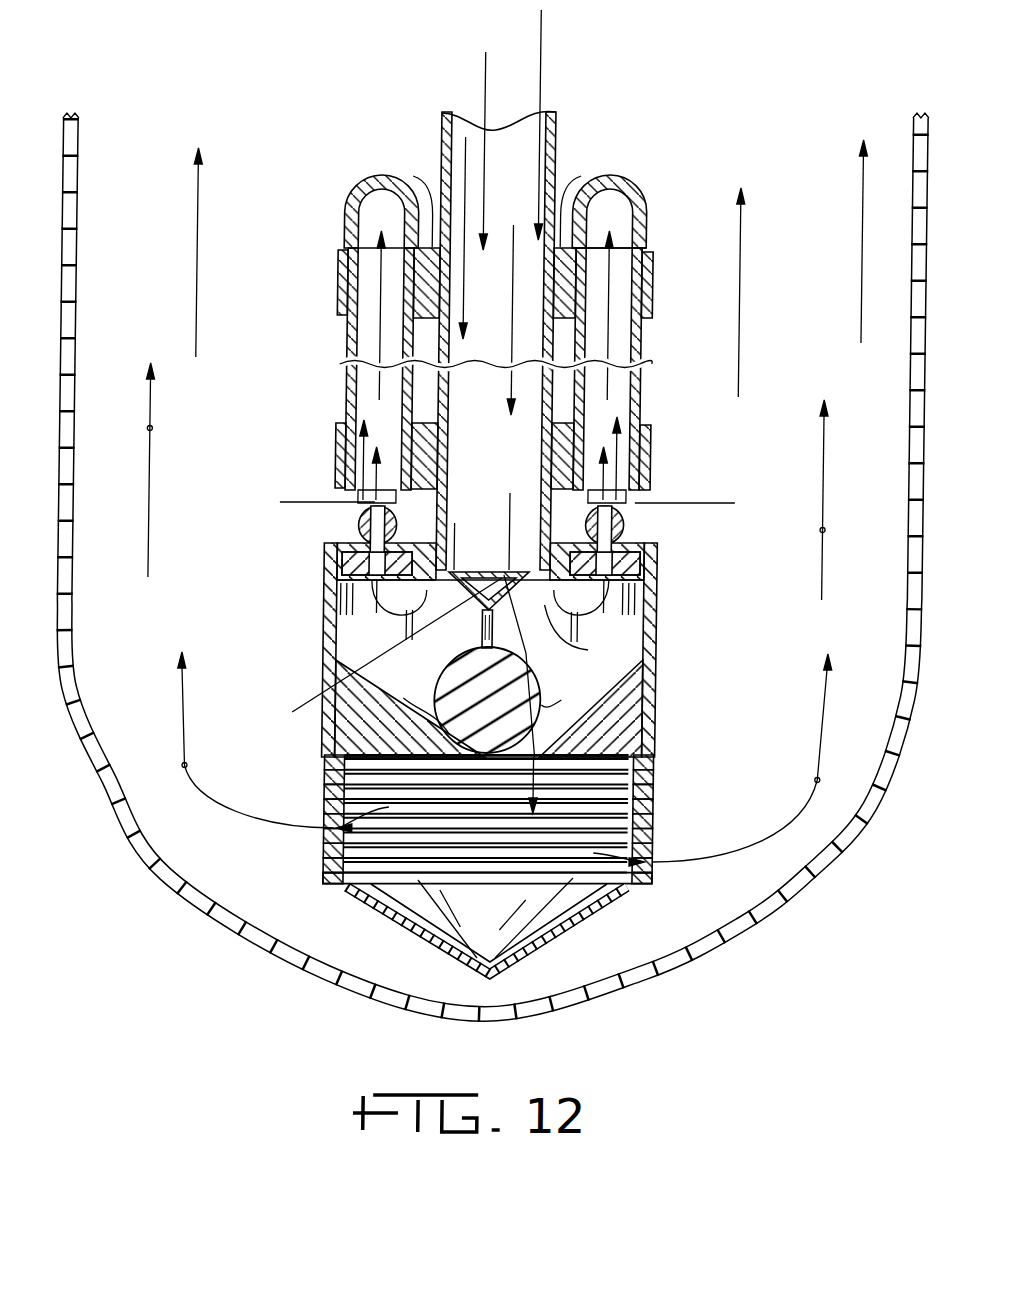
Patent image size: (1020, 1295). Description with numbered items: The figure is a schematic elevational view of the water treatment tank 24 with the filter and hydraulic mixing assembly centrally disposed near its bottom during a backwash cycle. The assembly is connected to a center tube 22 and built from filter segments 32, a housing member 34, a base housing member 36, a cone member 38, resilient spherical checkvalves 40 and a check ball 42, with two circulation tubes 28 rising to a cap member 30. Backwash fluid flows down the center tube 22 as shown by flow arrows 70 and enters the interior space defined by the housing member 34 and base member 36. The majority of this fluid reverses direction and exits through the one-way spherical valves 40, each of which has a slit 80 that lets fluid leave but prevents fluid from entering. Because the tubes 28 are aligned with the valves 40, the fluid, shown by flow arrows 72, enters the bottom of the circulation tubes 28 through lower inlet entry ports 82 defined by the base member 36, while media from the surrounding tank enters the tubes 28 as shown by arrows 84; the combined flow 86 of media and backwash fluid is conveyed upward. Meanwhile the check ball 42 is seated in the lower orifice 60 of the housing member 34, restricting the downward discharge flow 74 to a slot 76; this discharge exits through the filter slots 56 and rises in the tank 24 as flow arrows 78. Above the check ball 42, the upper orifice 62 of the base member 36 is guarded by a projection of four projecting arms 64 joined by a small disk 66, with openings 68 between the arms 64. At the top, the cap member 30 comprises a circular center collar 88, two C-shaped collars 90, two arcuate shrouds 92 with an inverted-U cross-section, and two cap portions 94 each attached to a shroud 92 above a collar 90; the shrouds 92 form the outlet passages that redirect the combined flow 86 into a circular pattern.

The center tube 22 is at (557, 123).
The water treatment tank 24 is at (217, 918).
The circulation tubes 28 is at (347, 355).
The cap member 30 is at (647, 196).
The filter segments 32 is at (330, 772).
The housing member 34 is at (327, 650).
The base housing member 36 is at (338, 570).
The cone member 38 is at (447, 927).
The spherical checkvalves 40 is at (345, 555).
The check ball 42 is at (468, 712).
The filter slots 56 is at (659, 778).
The lower orifice 60 is at (413, 701).
The upper orifice 62 is at (486, 574).
The projecting arms 64 is at (440, 649).
The small disk 66 is at (487, 625).
The openings 68 is at (492, 512).
The flow arrows 70 is at (533, 62).
The flow arrows 72 is at (355, 505).
The flow arrow 74 is at (530, 653).
The slot 76 is at (566, 690).
The flow arrows 78 is at (150, 428).
The slit 80 is at (362, 527).
The lower inlet entry ports 82 is at (370, 473).
The arrows 84 is at (303, 502).
The combined flow 86 is at (380, 325).
The circular center collar 88 is at (653, 285).
The C-shaped collars 90 is at (340, 285).
The arcuate shrouds 92 is at (415, 182).
The cap portions 94 is at (357, 196).